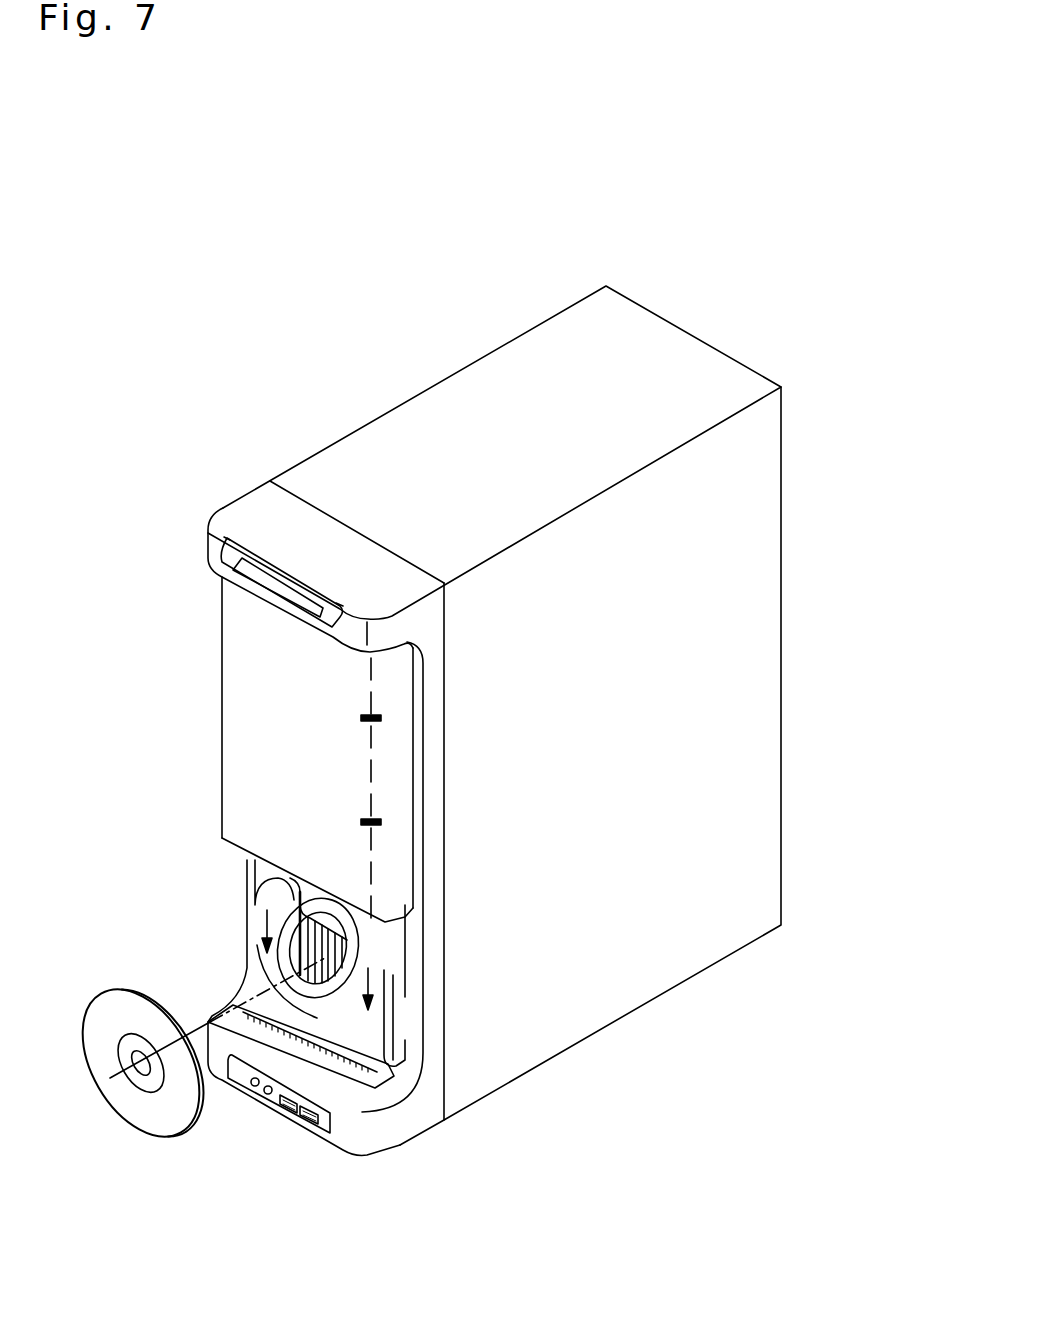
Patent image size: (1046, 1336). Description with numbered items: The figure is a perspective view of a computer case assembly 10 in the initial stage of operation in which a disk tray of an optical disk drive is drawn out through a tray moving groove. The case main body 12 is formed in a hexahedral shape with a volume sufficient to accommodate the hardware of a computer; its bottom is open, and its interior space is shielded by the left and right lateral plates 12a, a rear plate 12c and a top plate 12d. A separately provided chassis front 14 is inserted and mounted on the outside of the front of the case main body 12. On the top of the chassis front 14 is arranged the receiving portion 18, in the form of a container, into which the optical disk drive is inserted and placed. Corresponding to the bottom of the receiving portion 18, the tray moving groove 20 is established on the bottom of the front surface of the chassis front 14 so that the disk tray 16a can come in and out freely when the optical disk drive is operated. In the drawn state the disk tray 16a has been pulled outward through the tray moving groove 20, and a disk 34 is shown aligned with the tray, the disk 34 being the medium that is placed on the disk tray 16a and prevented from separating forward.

The computer apparatus 10 is at (116, 331).
The case main body 12 is at (727, 357).
The lateral plates 12a is at (598, 935).
The rear plate 12c is at (781, 677).
The top plate 12d is at (383, 443).
The chassis front 14 is at (417, 1110).
The disk tray 16a is at (370, 1040).
The receiving portion 18 is at (274, 740).
The tray moving groove 20 is at (390, 980).
The disk 34 is at (165, 1118).